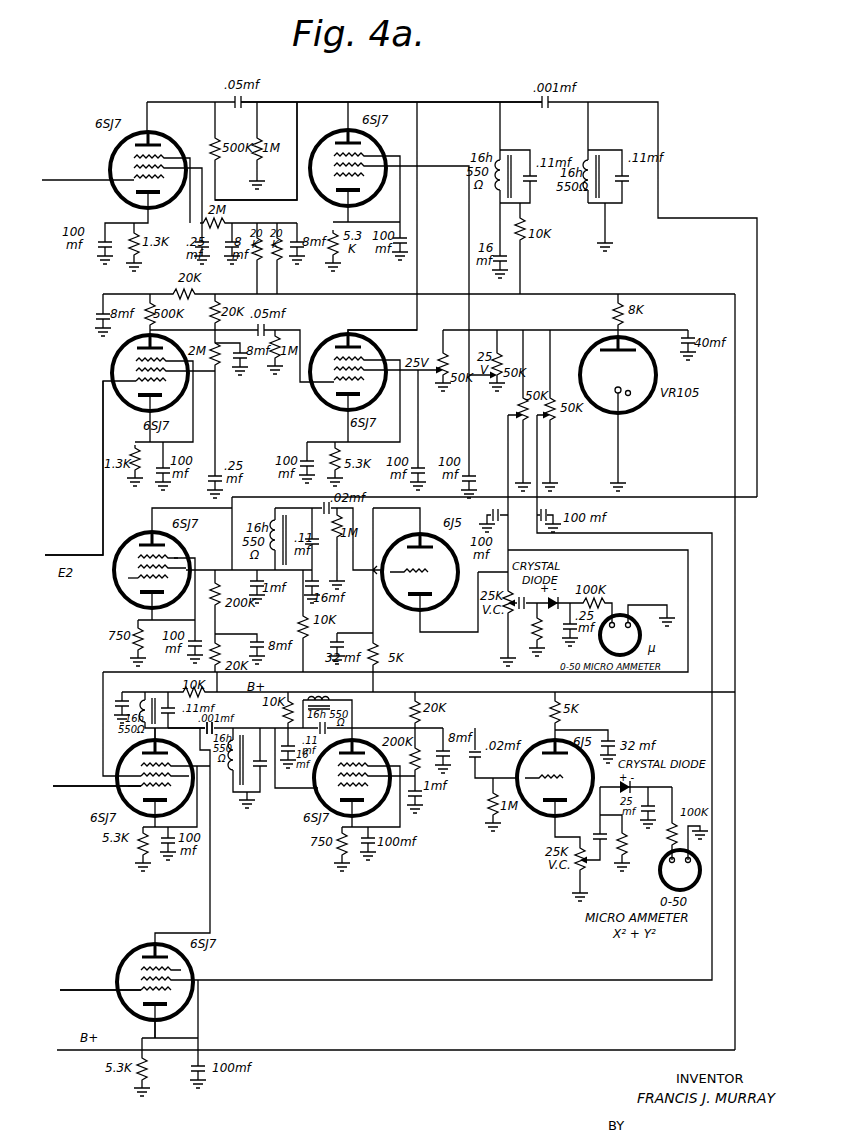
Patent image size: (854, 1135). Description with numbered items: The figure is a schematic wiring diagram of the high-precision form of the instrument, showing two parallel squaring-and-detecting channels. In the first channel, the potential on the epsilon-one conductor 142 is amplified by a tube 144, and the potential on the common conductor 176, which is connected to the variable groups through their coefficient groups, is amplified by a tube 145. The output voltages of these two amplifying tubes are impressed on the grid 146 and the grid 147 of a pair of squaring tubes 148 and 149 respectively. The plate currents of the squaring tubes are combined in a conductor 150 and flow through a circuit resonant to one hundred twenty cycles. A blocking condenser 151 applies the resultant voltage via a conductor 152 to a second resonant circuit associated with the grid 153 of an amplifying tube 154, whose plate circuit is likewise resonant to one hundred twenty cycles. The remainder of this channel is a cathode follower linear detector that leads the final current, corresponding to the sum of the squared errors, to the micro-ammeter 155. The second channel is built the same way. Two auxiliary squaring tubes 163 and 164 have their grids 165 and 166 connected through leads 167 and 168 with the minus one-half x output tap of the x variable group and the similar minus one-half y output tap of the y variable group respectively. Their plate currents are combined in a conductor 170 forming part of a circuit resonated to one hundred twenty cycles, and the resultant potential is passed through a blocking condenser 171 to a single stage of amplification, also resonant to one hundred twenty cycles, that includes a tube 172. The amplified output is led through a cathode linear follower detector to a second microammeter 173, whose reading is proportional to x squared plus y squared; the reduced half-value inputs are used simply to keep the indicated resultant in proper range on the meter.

The ε1 conductor 142 is at (43, 180).
The amplifying tube 144 is at (112, 170).
The grid 146 is at (261, 151).
The squaring tube 148 is at (320, 143).
The conductor 150 is at (462, 96).
The blocking condenser 151 is at (540, 106).
The conductor 152 is at (570, 106).
The amplifying tube 145 is at (112, 368).
The squaring tube 149 is at (317, 350).
The grid 147 is at (336, 398).
The common conductor 176 is at (90, 561).
The amplifying tube 154 is at (116, 573).
The grid 153 is at (130, 610).
The micro-ammeter 155 is at (603, 649).
The grid 166 is at (117, 788).
The lead 168 is at (58, 800).
The auxiliary squaring tube 164 is at (126, 789).
The conductor 170 is at (191, 728).
The blocking condenser 171 is at (224, 727).
The amplifying tube 172 is at (315, 800).
The microammeter 173 is at (662, 862).
The auxiliary squaring tube 163 is at (129, 952).
The lead 167 is at (88, 976).
The grid 165 is at (142, 994).